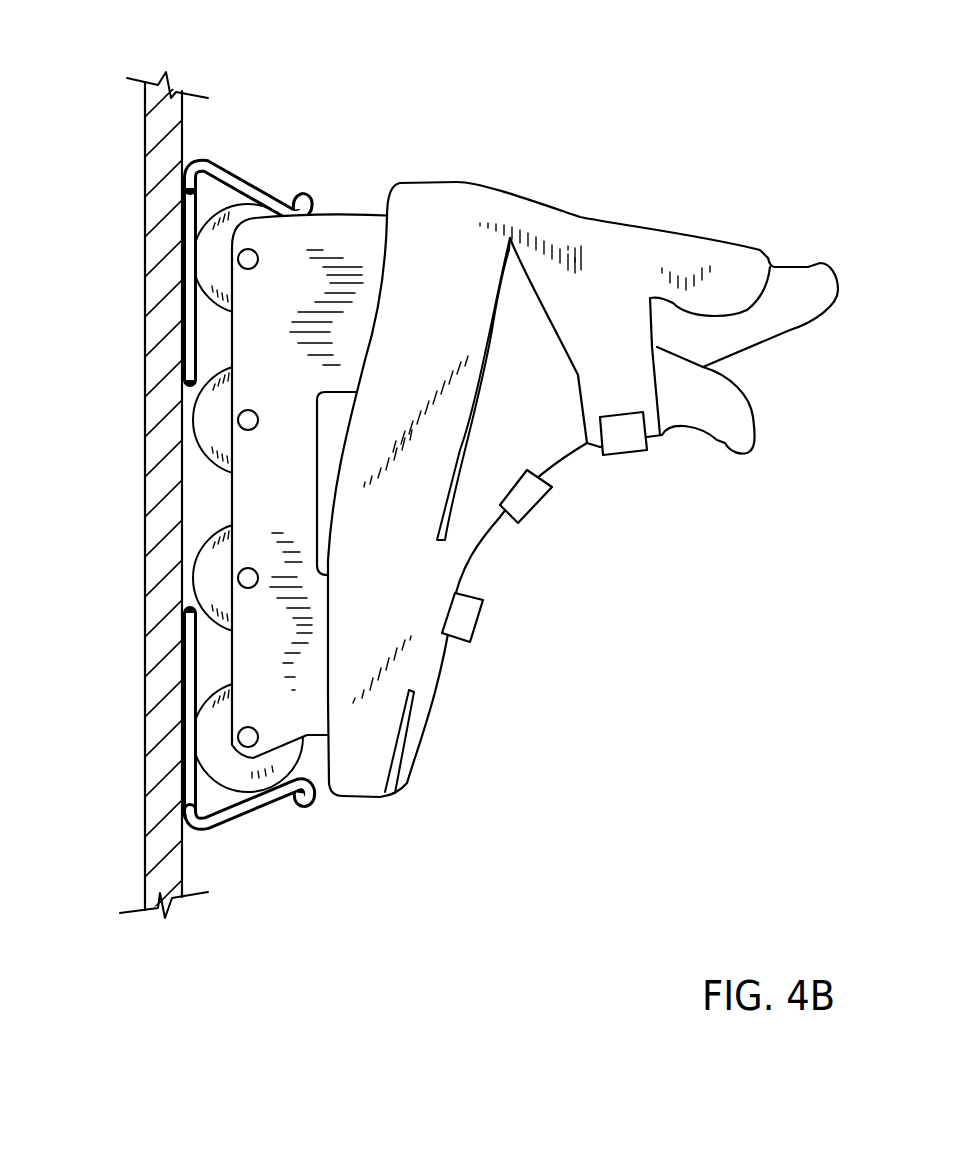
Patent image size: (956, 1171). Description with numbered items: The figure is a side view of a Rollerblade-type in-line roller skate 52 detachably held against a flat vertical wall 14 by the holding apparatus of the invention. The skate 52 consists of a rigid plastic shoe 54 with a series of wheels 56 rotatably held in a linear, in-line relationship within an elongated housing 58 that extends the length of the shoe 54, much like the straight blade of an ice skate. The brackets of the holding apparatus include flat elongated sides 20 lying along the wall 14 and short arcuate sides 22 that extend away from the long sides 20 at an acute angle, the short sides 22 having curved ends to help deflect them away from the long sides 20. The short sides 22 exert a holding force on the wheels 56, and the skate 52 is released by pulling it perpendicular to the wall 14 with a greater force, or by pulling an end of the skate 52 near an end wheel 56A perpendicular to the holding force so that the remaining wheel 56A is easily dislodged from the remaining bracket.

The wall 14 is at (145, 136).
The flat elongated sides 20 is at (190, 222).
The short arcuate sides 22 is at (255, 178).
The Rollerblade skate 52 is at (577, 467).
The rigid plastic shoe 54 is at (618, 262).
The wheels 56 is at (203, 418).
The end wheel 56A is at (213, 285).
The elongated housing 58 is at (267, 507).